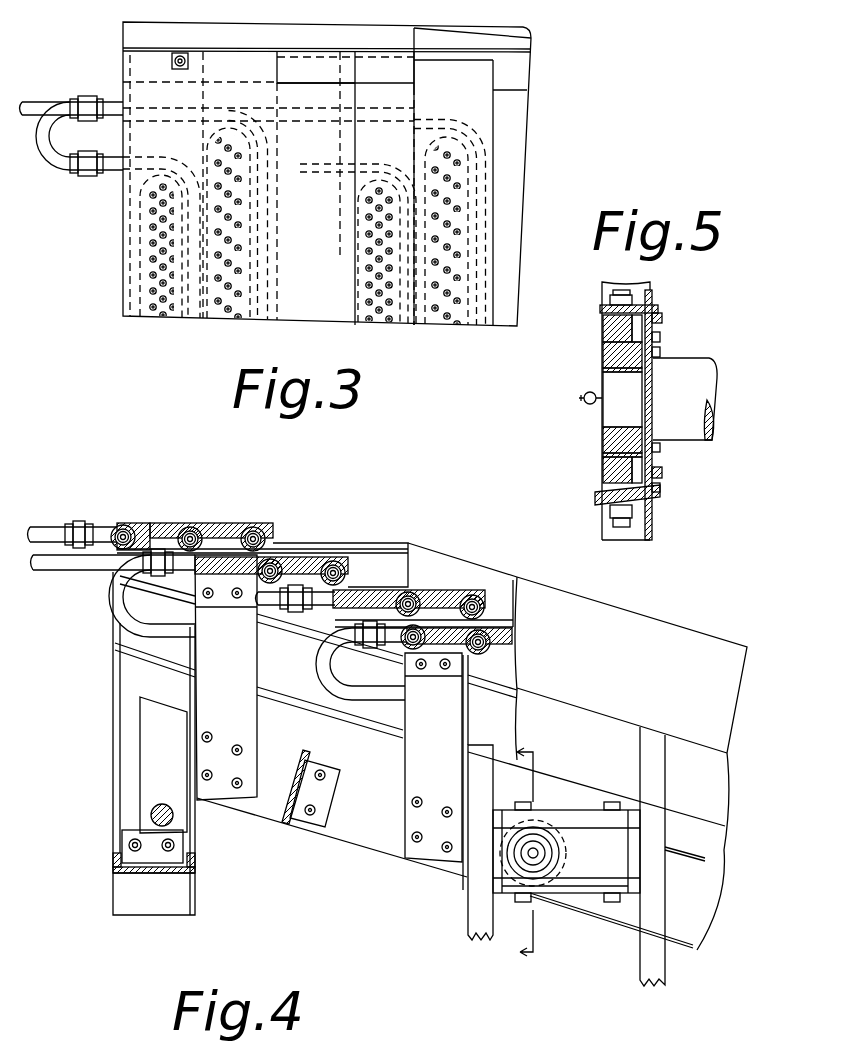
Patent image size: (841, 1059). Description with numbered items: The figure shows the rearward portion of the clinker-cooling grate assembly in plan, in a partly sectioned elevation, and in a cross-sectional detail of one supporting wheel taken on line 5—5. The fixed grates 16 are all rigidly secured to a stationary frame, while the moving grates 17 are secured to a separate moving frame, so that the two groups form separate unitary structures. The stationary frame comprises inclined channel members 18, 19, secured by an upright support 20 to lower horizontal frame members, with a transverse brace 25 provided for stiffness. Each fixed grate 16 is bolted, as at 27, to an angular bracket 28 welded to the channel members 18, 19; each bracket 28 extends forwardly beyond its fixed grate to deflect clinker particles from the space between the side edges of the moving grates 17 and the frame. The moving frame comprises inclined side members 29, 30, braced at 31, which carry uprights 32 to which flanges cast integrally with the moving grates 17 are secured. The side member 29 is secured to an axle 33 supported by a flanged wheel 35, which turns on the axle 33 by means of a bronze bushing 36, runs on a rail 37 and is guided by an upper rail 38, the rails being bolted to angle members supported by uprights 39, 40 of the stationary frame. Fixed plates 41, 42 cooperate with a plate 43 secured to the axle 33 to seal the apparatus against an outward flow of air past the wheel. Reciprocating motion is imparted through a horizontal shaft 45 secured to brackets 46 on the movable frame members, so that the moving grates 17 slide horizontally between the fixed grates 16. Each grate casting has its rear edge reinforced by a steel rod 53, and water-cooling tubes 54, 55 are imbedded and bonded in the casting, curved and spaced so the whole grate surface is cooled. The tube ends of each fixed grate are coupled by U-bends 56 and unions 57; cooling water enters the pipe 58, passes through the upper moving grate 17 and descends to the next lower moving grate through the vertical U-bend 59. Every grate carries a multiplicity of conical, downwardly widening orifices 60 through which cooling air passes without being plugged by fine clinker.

In FIG. 4, the section line 5— 5 is at (519, 853).
In FIG. 3, the fixed grates 16 is at (315, 188).
In FIG. 4, the fixed grates 16 is at (158, 523).
In FIG. 3, the moving grates 17 is at (316, 95).
In FIG. 3, the inclined channel member 18 is at (472, 40).
In FIG. 4, the inclined channel member 18 is at (426, 651).
In FIG. 4, the inclined channel member 19 is at (632, 763).
In FIG. 4, the upright support 20 is at (154, 745).
In FIG. 4, the transverse brace 25 is at (142, 871).
In FIG. 3, the bolt 27 is at (198, 43).
In FIG. 3, the angular bracket 28 is at (534, 76).
In FIG. 4, the angular bracket 28 is at (400, 553).
In FIG. 4, the inclined side member 29 is at (316, 726).
In FIG. 4, the inclined side member 30 is at (596, 842).
In FIG. 4, the brace 31 is at (297, 772).
In FIG. 4, the upright 32 is at (328, 708).
In FIG. 5, the axle 33 is at (685, 399).
In FIG. 4, the axle 33 is at (545, 850).
In FIG. 4, the flanged wheel 35 is at (553, 864).
In FIG. 5, the bronze bushing 36 is at (620, 373).
In FIG. 5, the rail 37 is at (608, 477).
In FIG. 4, the rail 37 is at (552, 886).
In FIG. 5, the upper rail 38 is at (608, 333).
In FIG. 4, the upper rail 38 is at (622, 818).
In FIG. 4, the upright of stationary frame 39 is at (468, 920).
In FIG. 4, the upright of stationary frame 40 is at (645, 958).
In FIG. 5, the fixed plate 41 is at (661, 322).
In FIG. 5, the fixed plate 42 is at (661, 471).
In FIG. 5, the plate 43 is at (661, 340).
In FIG. 4, the horizontal shaft 45 is at (170, 798).
In FIG. 4, the bracket 46 is at (163, 765).
In FIG. 4, the steel rod 53 is at (121, 529).
In FIG. 3, the water-cooling tube 54 is at (188, 318).
In FIG. 4, the water-cooling tube 54 is at (190, 533).
In FIG. 3, the water-cooling tube 55 is at (470, 128).
In FIG. 4, the water-cooling tube 55 is at (280, 522).
In FIG. 3, the U-bend 56 is at (48, 158).
In FIG. 4, the U-bend 56 is at (49, 532).
In FIG. 3, the union 57 is at (96, 179).
In FIG. 3, the pipe 58 is at (45, 102).
In FIG. 4, the pipe 58 is at (69, 568).
In FIG. 4, the vertical U-bend 59 is at (112, 603).
In FIG. 3, the vertical ports or orifices 60 is at (306, 321).
In FIG. 4, the vertical ports or orifices 60 is at (248, 533).